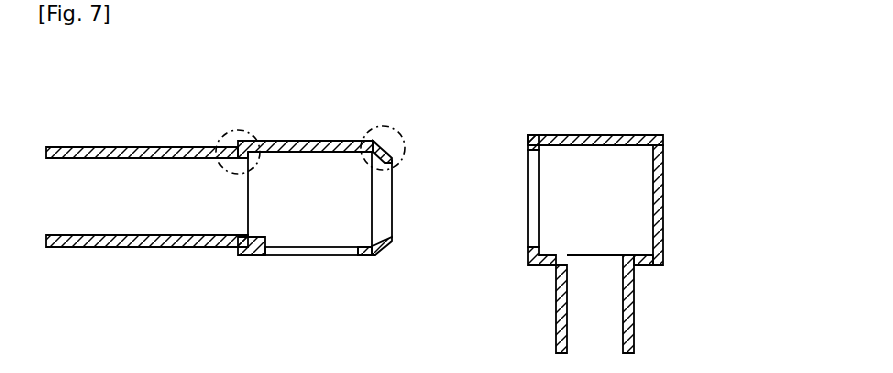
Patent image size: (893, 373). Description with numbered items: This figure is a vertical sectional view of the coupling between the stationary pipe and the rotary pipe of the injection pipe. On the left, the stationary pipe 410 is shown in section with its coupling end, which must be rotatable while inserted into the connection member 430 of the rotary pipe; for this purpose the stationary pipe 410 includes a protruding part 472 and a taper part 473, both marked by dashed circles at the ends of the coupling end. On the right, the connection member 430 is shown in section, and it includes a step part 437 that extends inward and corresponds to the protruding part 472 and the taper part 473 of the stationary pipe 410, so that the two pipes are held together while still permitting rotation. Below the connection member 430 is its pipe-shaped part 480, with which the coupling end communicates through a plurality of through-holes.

The stationary pipe 410 is at (173, 147).
The protruding part 472 is at (233, 130).
The taper part 473 is at (390, 127).
The connection member 430 is at (607, 135).
The step part 437 is at (660, 147).
The pipe-shaped part 480 is at (607, 322).